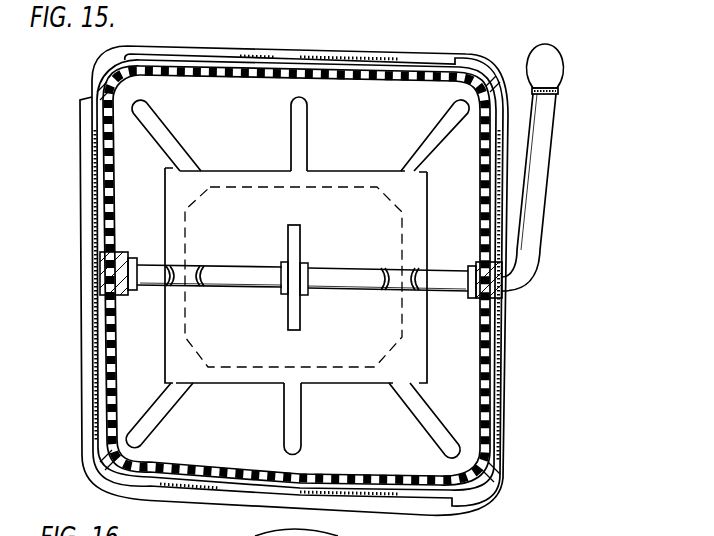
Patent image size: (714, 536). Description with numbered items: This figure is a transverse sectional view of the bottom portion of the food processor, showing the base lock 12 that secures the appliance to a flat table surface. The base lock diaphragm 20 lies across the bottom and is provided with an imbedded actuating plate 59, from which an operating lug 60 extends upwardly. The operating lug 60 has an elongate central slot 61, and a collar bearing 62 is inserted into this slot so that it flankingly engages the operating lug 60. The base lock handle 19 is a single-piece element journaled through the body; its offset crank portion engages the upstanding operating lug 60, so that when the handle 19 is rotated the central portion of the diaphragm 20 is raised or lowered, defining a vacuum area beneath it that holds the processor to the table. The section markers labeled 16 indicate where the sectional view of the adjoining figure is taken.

The base lock 12 is at (530, 364).
The section line 16- 16 is at (48, 315).
The base lock handle 19 is at (548, 166).
The base lock diaphragm 20 is at (483, 0).
The actuating plate 59 is at (227, 187).
The operating lug 60 is at (288, 236).
The elongate central slot 61 is at (290, 299).
The collar bearing 62 is at (306, 263).